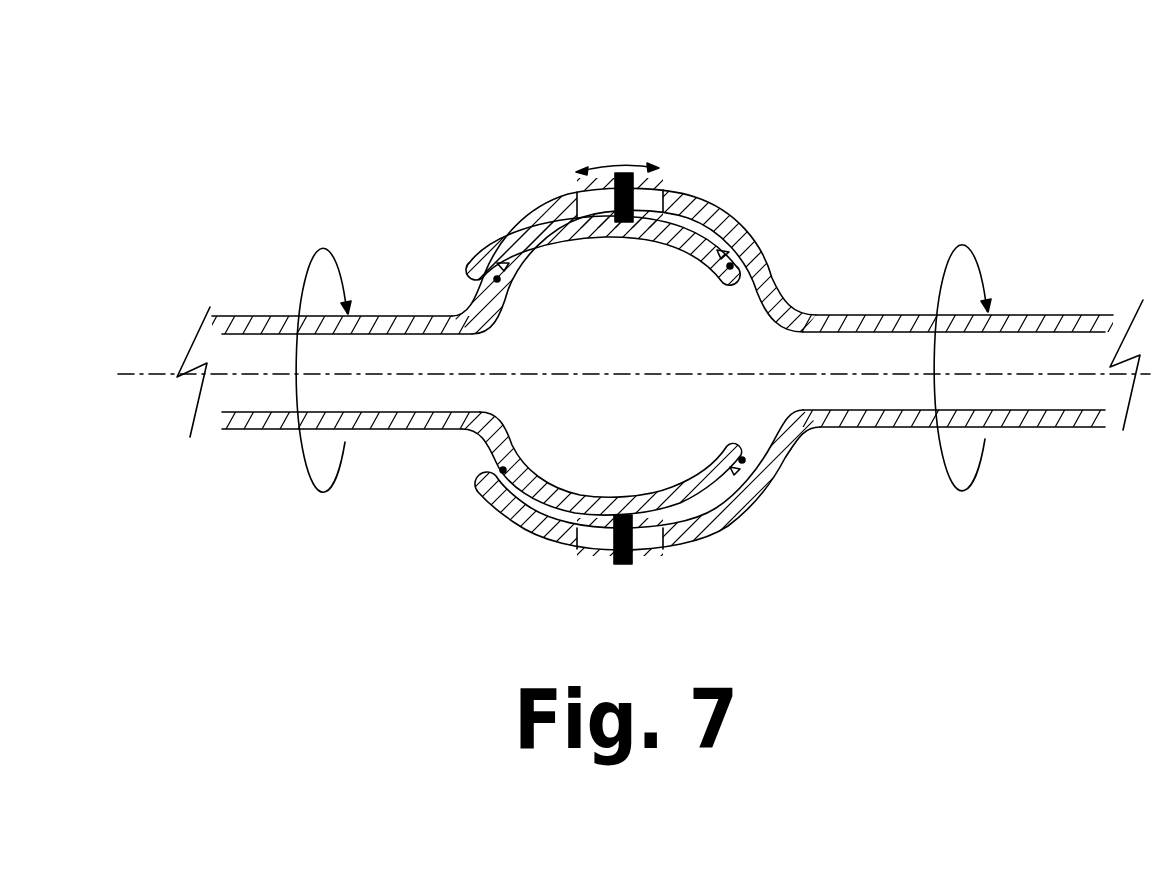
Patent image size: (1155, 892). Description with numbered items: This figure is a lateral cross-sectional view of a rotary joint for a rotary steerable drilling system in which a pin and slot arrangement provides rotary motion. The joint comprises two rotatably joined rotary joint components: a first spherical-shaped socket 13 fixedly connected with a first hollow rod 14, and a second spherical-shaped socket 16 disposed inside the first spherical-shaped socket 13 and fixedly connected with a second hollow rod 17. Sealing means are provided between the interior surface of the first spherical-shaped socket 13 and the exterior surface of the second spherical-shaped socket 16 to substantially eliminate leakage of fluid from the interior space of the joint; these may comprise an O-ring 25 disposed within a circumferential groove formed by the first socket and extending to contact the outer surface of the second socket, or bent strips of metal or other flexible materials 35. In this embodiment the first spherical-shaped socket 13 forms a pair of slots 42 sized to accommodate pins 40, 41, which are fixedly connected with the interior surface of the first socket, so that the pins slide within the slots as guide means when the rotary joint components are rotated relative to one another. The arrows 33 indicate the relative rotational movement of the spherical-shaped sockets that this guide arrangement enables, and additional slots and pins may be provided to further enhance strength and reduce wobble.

The first spherical-shaped socket 13 is at (577, 192).
The first hollow rod 14 is at (1067, 315).
The second spherical-shaped socket 16 is at (500, 508).
The second hollow rod 17 is at (283, 317).
The O-ring 25 is at (504, 268).
The arrows 33 is at (636, 164).
The bent strips of metal or other flexible materials 35 is at (497, 279).
The pin 40 is at (616, 553).
The pin 41 is at (657, 191).
The slots 42 is at (653, 198).